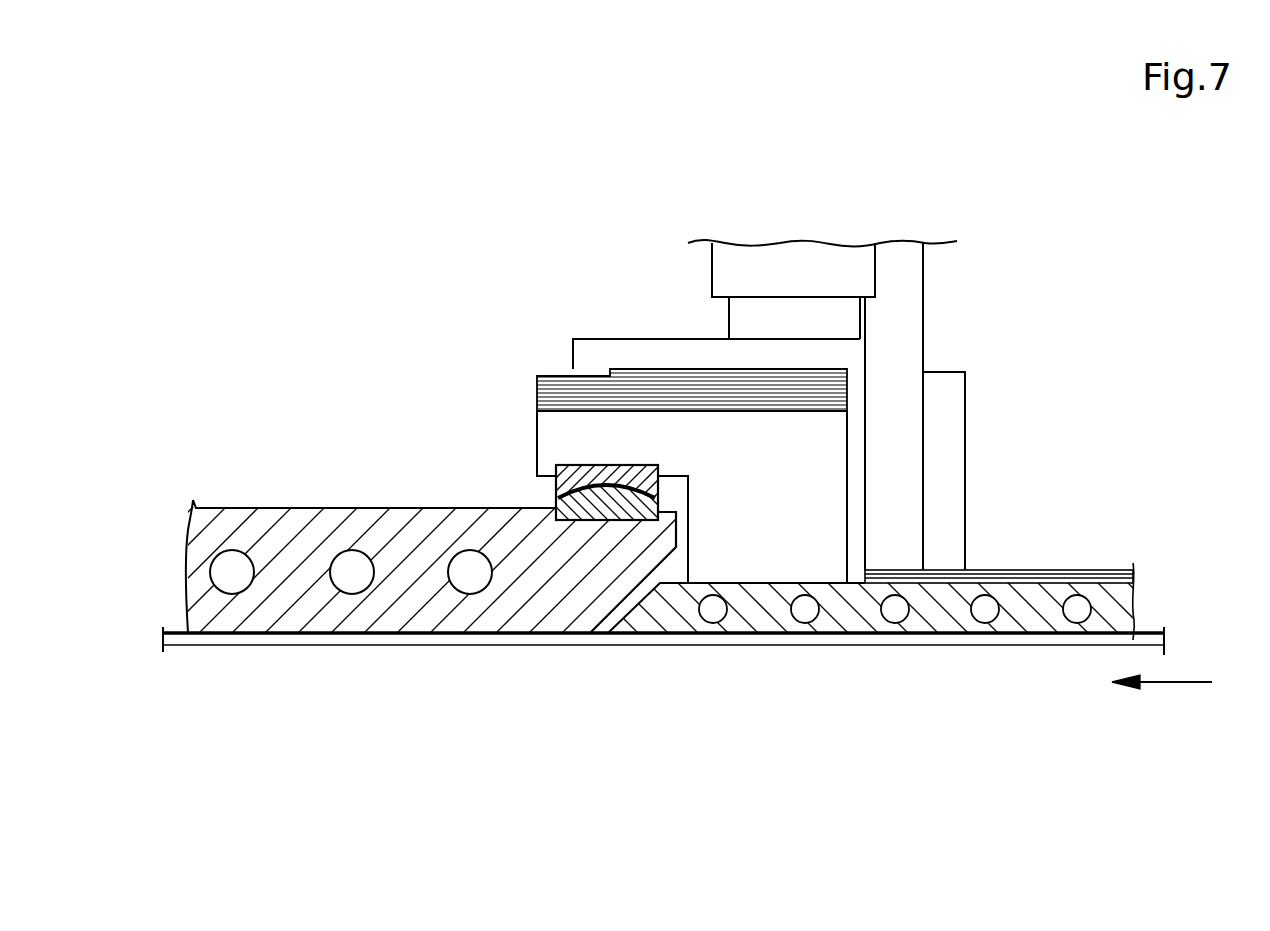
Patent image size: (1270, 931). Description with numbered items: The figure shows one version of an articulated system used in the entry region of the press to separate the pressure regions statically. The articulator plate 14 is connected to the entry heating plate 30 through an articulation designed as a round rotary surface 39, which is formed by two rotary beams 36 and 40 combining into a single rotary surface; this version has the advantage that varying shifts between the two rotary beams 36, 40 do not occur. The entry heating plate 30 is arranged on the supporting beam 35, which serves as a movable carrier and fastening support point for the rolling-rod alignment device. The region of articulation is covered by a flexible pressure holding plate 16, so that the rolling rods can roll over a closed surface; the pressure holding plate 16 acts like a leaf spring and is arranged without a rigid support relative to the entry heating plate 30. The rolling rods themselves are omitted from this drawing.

The articulator plate 14 is at (427, 674).
The pressure holding plate 16 is at (663, 737).
The entry heating plate 30 is at (870, 707).
The supporting beam 35 is at (650, 435).
The rotary beam 36 is at (599, 349).
The round rotary surface 39 is at (606, 373).
The rotary beam 40 is at (589, 350).